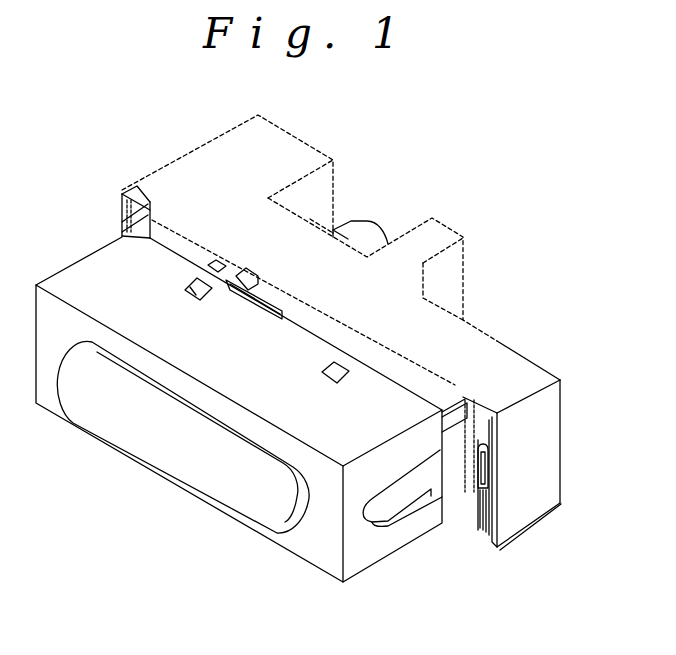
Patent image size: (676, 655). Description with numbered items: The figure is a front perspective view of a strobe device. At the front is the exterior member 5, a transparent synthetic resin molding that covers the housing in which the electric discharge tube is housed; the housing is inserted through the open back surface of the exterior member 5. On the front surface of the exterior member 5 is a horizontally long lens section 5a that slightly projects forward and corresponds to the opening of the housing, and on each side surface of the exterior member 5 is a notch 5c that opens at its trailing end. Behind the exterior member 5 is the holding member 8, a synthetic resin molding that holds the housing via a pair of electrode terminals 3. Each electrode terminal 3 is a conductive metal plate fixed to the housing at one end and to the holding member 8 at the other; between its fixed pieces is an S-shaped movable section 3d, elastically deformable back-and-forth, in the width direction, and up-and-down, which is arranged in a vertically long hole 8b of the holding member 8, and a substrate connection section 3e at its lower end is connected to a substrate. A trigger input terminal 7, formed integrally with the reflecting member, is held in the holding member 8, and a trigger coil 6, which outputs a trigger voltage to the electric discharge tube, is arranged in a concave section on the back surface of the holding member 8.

The electrode terminal 3 is at (147, 216).
The movable section 3d is at (463, 498).
The substrate connection section 3e is at (542, 519).
The exterior member 5 is at (75, 284).
The lens section 5a is at (165, 444).
The notch 5c is at (385, 526).
The trigger coil 6 is at (372, 228).
The trigger input terminal 7 is at (251, 273).
The holding member 8 is at (233, 167).
The vertically long hole 8b is at (123, 210).